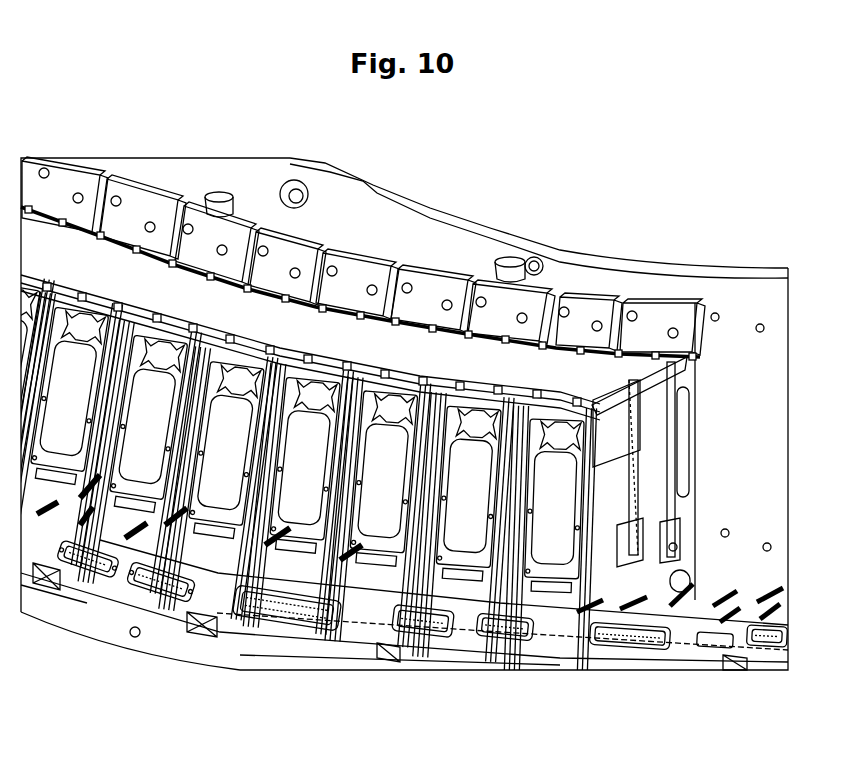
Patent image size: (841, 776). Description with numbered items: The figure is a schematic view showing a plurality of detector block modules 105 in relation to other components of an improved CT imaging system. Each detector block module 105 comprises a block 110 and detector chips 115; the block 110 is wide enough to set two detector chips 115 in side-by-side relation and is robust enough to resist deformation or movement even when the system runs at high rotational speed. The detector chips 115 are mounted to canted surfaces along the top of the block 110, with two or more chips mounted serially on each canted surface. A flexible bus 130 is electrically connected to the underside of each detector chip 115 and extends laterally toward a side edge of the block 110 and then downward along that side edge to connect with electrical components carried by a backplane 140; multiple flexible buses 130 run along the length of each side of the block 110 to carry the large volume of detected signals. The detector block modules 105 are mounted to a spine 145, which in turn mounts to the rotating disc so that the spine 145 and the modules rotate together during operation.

The detector block module 105 is at (707, 277).
The block 110 is at (446, 257).
The detector chips 115 is at (647, 393).
The flexible bus 130 is at (624, 496).
The backplane 140 is at (270, 640).
The spine 145 is at (424, 222).